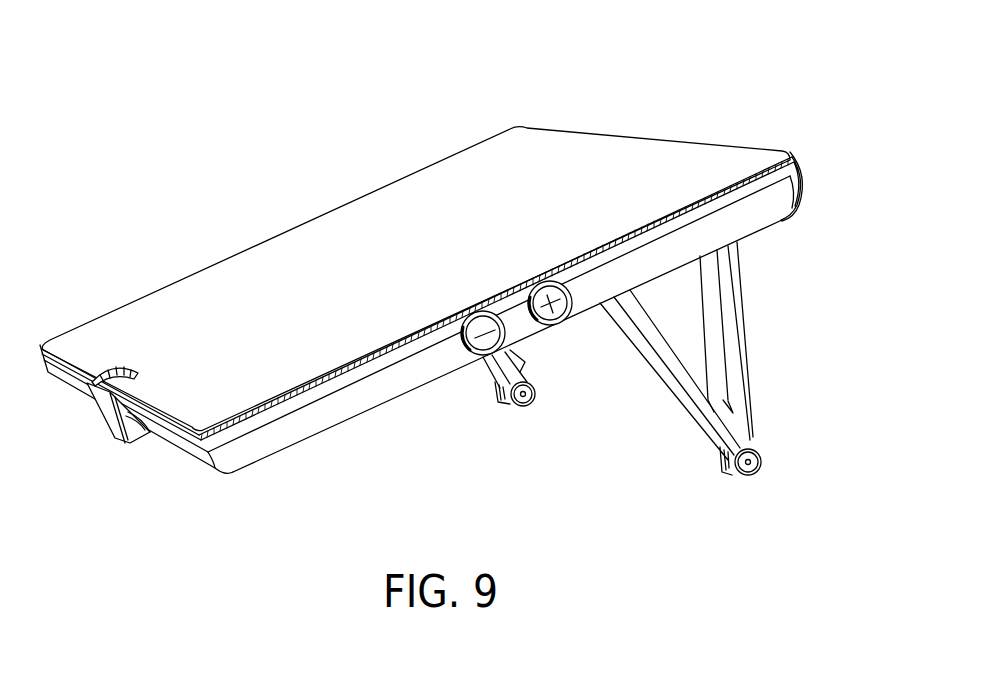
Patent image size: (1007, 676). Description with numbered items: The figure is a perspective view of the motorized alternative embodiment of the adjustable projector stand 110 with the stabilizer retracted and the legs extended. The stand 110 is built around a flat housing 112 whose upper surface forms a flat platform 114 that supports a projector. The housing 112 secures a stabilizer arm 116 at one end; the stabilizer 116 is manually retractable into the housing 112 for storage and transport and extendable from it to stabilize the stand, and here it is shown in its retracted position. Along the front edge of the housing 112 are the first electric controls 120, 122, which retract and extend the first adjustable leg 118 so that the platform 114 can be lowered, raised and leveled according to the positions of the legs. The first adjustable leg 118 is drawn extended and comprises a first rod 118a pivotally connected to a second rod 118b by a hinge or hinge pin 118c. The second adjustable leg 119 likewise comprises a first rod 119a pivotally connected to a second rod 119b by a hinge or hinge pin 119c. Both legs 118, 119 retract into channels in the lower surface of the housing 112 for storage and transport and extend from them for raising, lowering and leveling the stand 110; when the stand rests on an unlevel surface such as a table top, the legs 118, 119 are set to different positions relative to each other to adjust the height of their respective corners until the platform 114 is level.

The projector stand 110 is at (435, 278).
The flat housing 112 is at (435, 278).
The upper surface or platform 114 is at (405, 187).
The stabilizer arm 116 is at (103, 427).
The first adjustable leg 118 is at (715, 379).
The first rod 118a is at (748, 375).
The second rod 118b is at (688, 403).
The hinge or hinge pin 118c is at (752, 476).
The second adjustable leg 119 is at (536, 422).
The first rod 119a is at (533, 366).
The second rod 119b is at (483, 375).
The hinge or hinge pin 119c is at (528, 408).
The first electric control 120 is at (556, 320).
The first electric control 122 is at (467, 347).